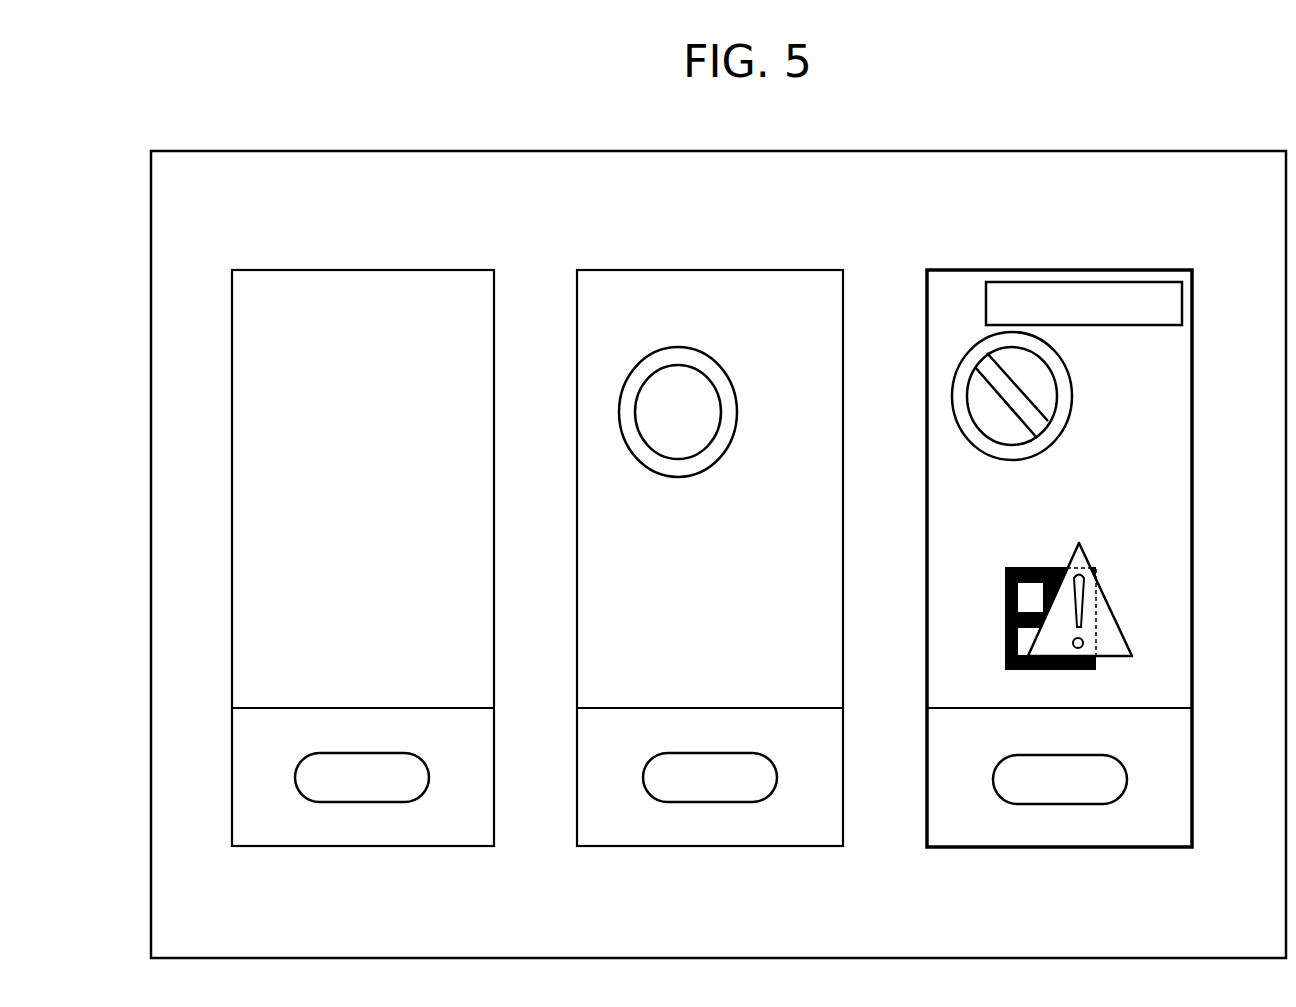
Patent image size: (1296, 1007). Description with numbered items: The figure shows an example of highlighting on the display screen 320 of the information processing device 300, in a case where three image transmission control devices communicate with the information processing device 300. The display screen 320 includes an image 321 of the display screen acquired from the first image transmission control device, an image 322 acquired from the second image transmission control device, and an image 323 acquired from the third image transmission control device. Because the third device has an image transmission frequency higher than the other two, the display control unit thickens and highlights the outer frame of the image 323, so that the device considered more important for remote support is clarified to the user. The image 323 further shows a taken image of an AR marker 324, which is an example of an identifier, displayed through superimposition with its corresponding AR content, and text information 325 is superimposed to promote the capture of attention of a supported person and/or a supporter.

The information processing device 300 is at (930, 140).
The display screen 320 is at (1136, 150).
The image 321 is at (351, 269).
The image 322 is at (697, 270).
The image 323 is at (1038, 270).
The AR marker 324 is at (1028, 567).
The text information 325 is at (1110, 326).